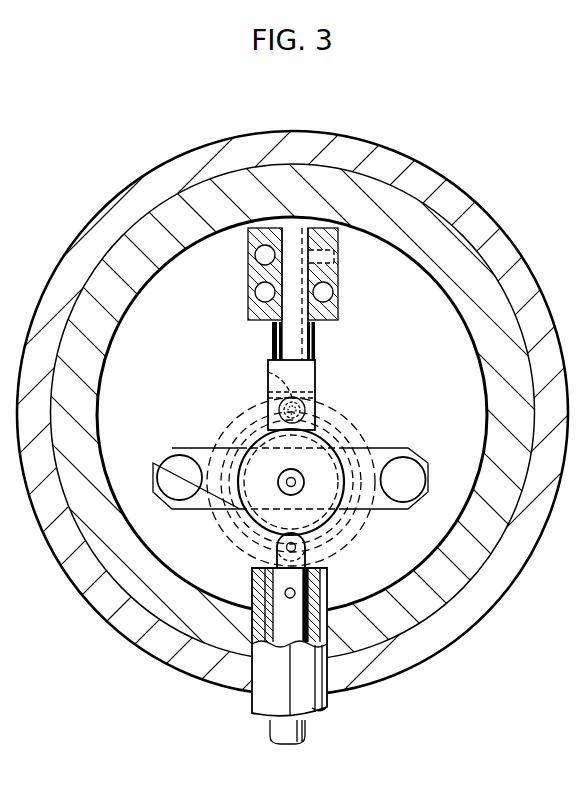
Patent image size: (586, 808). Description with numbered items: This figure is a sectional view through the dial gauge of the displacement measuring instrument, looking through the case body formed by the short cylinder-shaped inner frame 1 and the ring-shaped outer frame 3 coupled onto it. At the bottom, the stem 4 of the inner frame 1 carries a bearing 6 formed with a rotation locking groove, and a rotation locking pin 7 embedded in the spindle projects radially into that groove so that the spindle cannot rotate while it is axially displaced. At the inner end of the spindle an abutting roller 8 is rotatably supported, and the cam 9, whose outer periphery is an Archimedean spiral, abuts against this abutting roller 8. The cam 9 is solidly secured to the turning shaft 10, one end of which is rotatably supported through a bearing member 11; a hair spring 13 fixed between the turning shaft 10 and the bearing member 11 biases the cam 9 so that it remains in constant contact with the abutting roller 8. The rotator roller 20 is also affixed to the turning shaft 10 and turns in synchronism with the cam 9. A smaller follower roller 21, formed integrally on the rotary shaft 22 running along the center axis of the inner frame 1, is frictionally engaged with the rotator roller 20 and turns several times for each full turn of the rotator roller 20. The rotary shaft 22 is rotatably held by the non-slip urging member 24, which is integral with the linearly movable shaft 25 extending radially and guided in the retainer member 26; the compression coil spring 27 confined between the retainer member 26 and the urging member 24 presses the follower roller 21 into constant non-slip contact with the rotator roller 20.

The inner frame 1 is at (488, 304).
The outer frame 3 is at (488, 231).
The stem 4 is at (265, 695).
The bearing 6 is at (267, 566).
The rotation locking pin 7 is at (296, 592).
The abutting roller 8 is at (308, 546).
The cam 9 is at (310, 522).
The turning shaft 10 is at (281, 476).
The bearing member 11 is at (208, 496).
The hair spring 13 is at (353, 420).
The rotator roller 20 is at (263, 437).
The follower roller 21 is at (318, 407).
The rotary shaft 22 is at (270, 371).
The non-slip urging member 24 is at (298, 372).
The linearly movable shaft 25 is at (292, 338).
The retainer member 26 is at (341, 277).
The compression coil spring 27 is at (272, 331).